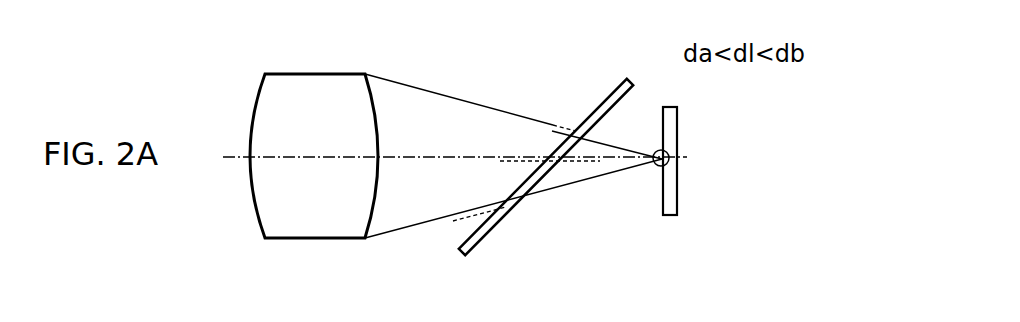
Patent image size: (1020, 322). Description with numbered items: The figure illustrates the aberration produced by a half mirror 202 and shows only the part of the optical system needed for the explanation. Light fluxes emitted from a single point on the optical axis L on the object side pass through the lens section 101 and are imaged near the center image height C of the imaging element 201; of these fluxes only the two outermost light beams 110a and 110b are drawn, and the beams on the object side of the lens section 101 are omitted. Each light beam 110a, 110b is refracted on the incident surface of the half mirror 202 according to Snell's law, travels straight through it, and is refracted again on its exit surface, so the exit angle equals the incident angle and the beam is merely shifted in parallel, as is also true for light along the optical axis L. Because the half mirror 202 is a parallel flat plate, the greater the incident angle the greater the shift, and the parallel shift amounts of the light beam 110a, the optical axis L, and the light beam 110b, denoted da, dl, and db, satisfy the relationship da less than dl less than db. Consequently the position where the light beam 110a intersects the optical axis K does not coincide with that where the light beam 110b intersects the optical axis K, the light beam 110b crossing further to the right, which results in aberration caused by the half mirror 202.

The lens section 101 is at (300, 228).
The light beam 110a is at (433, 93).
The light beam 110b is at (407, 228).
The imaging element 201 is at (669, 202).
The half mirror 202 is at (468, 256).
The optical axis L is at (233, 158).
The center image height C is at (670, 147).
The optical axis K is at (621, 161).
The parallel shift amount da is at (550, 149).
The parallel shift amount dl is at (512, 180).
The parallel shift amount db is at (460, 240).